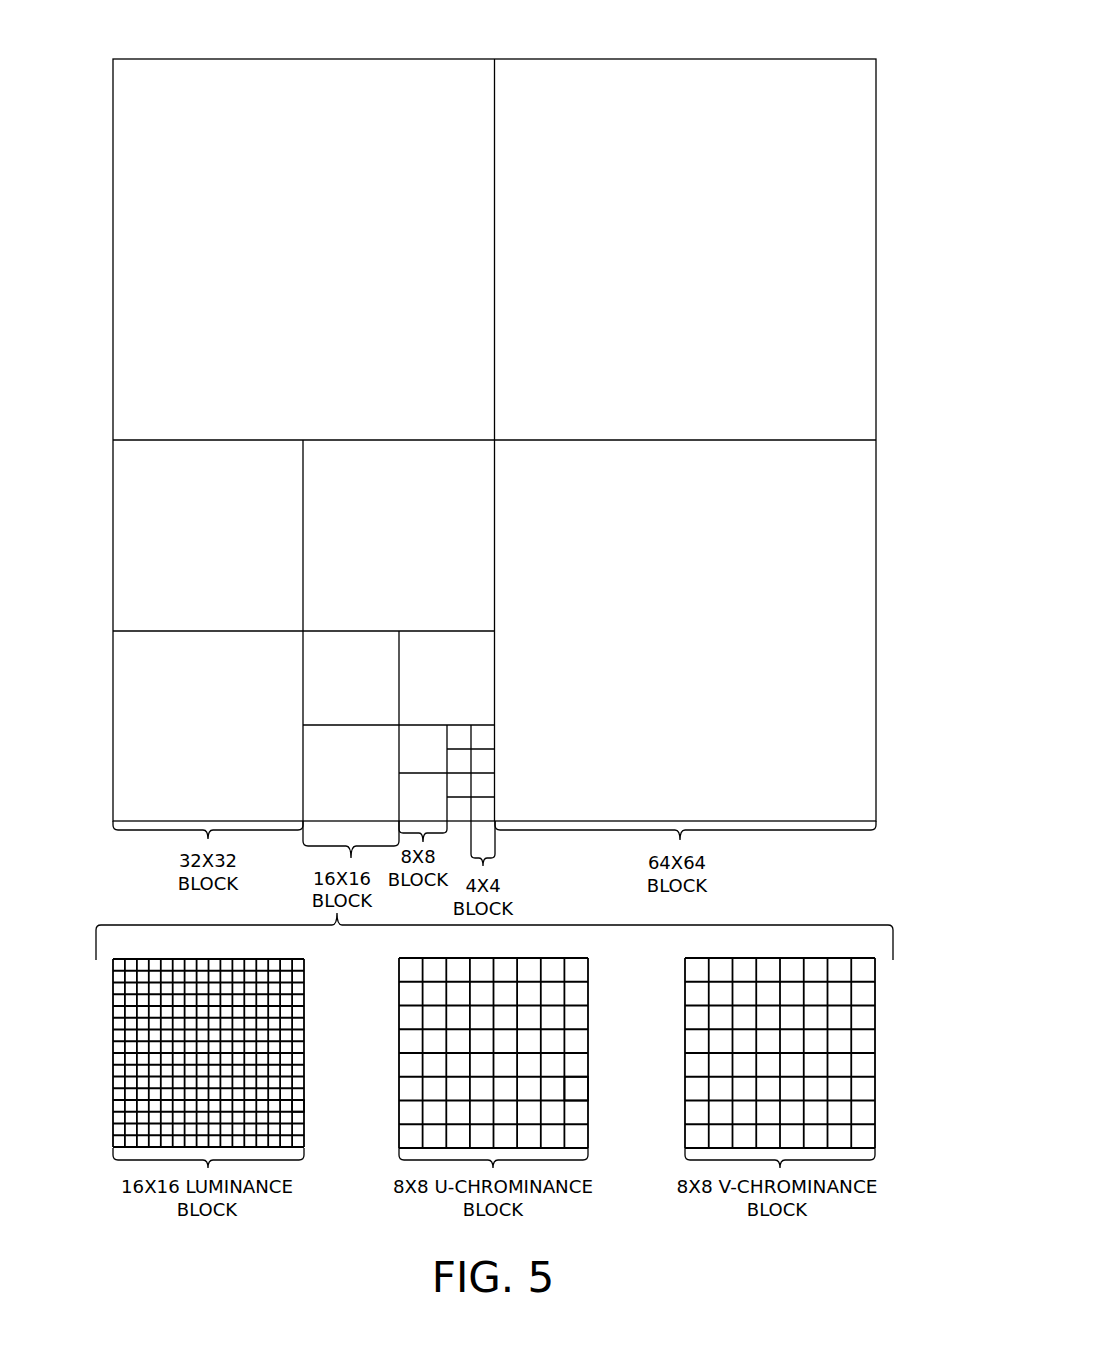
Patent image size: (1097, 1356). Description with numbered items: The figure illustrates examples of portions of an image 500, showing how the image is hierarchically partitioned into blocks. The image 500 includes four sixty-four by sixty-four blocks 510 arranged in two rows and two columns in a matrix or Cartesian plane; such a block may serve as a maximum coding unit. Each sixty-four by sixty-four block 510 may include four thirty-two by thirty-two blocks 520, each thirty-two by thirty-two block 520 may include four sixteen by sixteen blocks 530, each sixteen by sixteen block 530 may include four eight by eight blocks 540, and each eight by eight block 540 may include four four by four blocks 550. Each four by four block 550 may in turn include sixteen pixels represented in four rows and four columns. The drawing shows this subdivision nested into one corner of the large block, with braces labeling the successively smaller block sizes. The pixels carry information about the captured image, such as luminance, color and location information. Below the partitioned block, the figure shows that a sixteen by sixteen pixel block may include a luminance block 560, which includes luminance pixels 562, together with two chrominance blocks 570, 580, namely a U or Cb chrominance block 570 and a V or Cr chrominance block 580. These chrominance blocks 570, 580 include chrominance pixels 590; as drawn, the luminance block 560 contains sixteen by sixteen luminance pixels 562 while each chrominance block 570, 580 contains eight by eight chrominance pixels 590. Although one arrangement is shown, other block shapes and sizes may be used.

The image 500 is at (876, 57).
The 64×64 block 510 is at (880, 438).
The 32×32 block 520 is at (112, 630).
The 16×16 block 530 is at (497, 631).
The 8×8 block 540 is at (449, 724).
The 4×4 block 550 is at (497, 726).
The luminance block 560 is at (306, 960).
The luminance pixels 562 is at (306, 1110).
The U or Cb chrominance block 570 is at (591, 960).
The V or Cr chrominance block 580 is at (878, 960).
The chrominance pixels 590 is at (592, 1088).